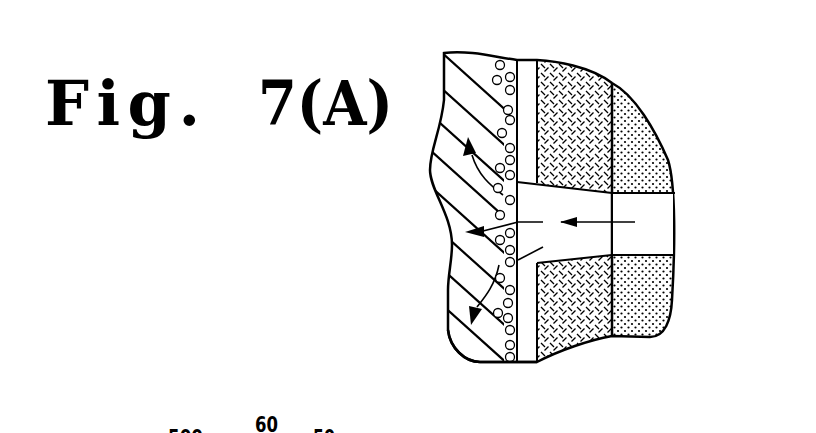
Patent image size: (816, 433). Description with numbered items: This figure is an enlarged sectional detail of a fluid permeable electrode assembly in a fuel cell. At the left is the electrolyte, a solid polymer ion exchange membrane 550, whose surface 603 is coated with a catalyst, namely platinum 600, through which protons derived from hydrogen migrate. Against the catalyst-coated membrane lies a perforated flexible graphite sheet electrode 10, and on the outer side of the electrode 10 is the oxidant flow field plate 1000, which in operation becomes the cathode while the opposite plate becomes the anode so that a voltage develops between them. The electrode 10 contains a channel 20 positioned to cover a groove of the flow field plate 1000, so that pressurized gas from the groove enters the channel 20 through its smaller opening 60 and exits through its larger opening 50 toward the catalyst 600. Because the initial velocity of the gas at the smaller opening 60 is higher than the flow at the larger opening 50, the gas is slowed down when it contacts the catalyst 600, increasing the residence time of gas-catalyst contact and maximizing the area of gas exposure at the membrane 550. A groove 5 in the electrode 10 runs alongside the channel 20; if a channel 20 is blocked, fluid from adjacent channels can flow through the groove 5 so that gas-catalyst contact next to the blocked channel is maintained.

The perforated flexible graphite sheet electrode 10 is at (593, 73).
The solid polymer ion exchange membrane 550 is at (457, 52).
The catalyst coated surface 603 is at (508, 58).
The groove 5 is at (525, 120).
The larger opening 50 is at (518, 213).
The channel 20 is at (565, 345).
The oxidant flow field plate 1000 is at (638, 143).
The smaller opening 60 is at (612, 237).
The platinum catalyst 600 is at (506, 313).